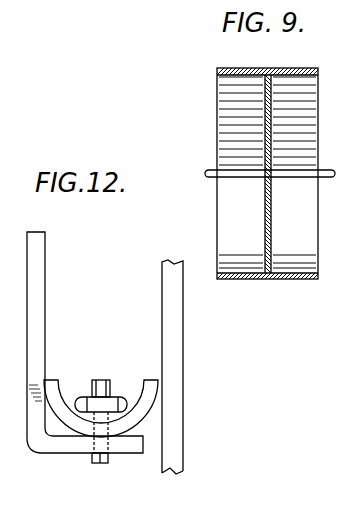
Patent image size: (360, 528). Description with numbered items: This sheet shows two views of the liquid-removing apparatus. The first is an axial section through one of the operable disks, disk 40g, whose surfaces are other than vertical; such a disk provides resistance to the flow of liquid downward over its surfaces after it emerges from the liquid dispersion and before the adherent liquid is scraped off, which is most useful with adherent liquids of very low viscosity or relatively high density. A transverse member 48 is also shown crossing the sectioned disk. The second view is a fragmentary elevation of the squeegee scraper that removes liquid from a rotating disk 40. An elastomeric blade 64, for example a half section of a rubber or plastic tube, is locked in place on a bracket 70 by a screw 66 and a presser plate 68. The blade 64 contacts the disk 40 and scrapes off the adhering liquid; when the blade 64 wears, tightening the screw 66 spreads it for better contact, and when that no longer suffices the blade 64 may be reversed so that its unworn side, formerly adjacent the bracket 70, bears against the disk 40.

In FIG. 9, the disk 40g is at (299, 280).
In FIG. 9, the cross rod 48 is at (330, 178).
In FIG. 12, the bracket 70 is at (46, 250).
In FIG. 12, the disk 40 is at (183, 408).
In FIG. 12, the elastomeric blade 64 is at (63, 381).
In FIG. 12, the presser plate 68 is at (122, 398).
In FIG. 12, the screw 66 is at (99, 463).